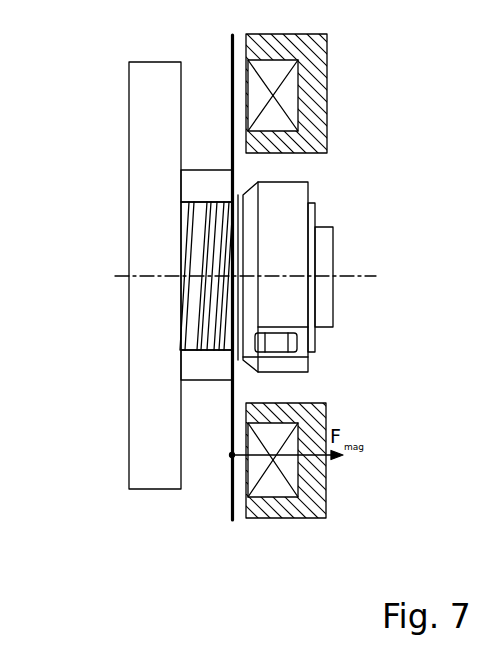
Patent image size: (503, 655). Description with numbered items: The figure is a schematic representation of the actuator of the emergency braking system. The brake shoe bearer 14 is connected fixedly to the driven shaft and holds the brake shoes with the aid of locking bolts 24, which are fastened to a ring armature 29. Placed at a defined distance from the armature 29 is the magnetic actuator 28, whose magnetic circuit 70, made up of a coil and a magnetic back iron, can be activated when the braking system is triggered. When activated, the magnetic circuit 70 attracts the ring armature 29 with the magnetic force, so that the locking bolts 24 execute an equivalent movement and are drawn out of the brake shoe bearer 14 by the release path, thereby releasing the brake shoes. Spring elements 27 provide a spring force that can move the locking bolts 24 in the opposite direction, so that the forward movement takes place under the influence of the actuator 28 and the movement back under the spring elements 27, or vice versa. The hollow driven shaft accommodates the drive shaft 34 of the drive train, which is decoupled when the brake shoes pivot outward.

The brake shoe bearer 14 is at (157, 316).
The locking bolts 24 is at (205, 183).
The spring elements 27 is at (192, 234).
The magnetic actuator 28 is at (270, 58).
The ring armature 29 is at (232, 370).
The drive shaft 34 is at (236, 257).
The magnetic circuit 70 is at (227, 276).